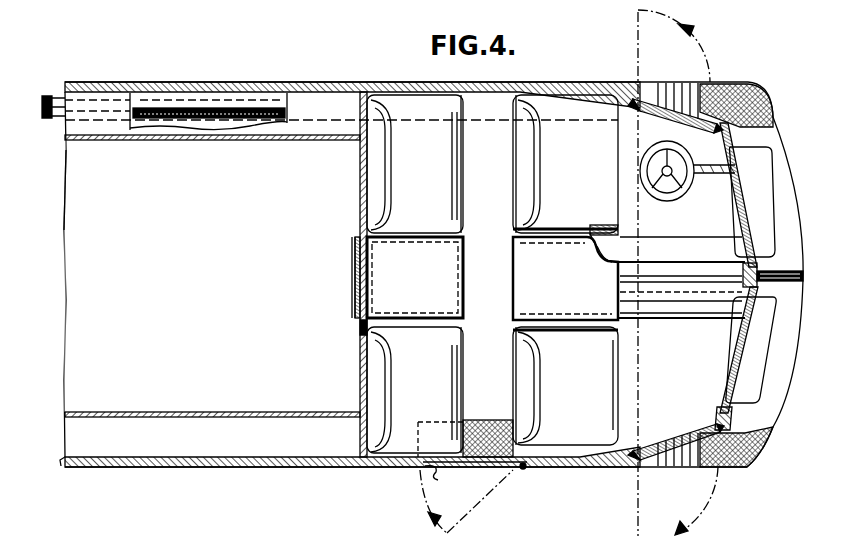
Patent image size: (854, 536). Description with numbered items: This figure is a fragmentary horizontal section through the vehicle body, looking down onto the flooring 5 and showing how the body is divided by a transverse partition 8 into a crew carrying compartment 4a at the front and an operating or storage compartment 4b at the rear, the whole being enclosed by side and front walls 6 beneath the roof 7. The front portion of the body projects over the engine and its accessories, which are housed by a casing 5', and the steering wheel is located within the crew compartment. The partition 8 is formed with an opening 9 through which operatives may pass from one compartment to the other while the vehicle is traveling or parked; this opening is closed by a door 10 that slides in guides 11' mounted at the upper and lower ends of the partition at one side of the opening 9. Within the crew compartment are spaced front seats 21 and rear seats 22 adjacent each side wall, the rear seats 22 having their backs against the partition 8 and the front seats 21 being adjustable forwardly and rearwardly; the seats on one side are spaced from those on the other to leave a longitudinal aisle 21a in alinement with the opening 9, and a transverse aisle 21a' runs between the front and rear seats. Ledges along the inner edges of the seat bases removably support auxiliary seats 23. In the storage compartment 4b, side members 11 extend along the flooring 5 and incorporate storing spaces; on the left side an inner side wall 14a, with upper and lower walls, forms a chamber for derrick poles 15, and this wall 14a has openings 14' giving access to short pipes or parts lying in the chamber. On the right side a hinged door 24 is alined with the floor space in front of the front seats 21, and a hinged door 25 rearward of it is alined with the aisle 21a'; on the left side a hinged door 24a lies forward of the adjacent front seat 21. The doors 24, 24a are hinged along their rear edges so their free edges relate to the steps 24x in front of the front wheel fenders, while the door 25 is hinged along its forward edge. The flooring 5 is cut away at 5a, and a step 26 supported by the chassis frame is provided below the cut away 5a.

The crew carrying compartment 4a is at (434, 274).
The operating or storage compartment 4b is at (72, 393).
The flooring 5 is at (176, 276).
The casing 5' is at (681, 299).
The cut away 5a is at (480, 420).
The side and front walls 6 is at (762, 270).
The roof 7 is at (668, 195).
The transverse partition 8 is at (360, 328).
The opening 9 is at (358, 248).
The door 10 is at (355, 268).
The side members 11 is at (212, 278).
The guides 11' is at (345, 274).
The openings 14' is at (208, 134).
The side wall 14a is at (210, 138).
The derrick poles 15 is at (190, 105).
The front seats 21 is at (603, 208).
The aisle 21a is at (631, 240).
The aisle 21a' is at (555, 278).
The rear seats 22 is at (447, 195).
The auxiliary seats 23 is at (443, 288).
The hinged door 24 is at (675, 433).
The hinged door 24a is at (657, 112).
The steps 24x is at (753, 92).
The hinged door 25 is at (490, 468).
The step 26 is at (463, 463).